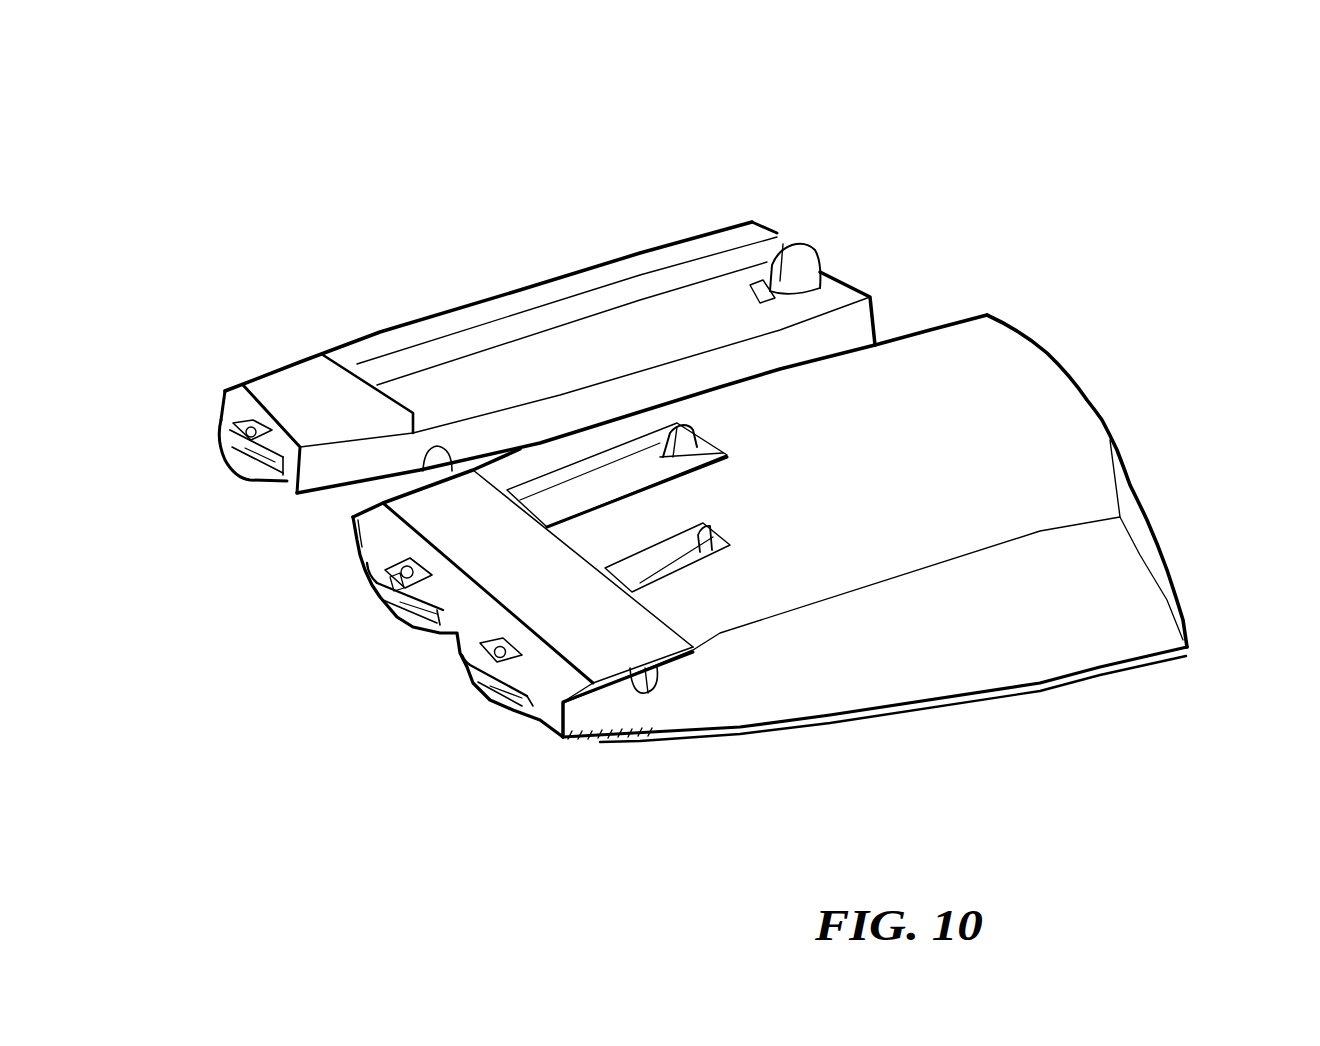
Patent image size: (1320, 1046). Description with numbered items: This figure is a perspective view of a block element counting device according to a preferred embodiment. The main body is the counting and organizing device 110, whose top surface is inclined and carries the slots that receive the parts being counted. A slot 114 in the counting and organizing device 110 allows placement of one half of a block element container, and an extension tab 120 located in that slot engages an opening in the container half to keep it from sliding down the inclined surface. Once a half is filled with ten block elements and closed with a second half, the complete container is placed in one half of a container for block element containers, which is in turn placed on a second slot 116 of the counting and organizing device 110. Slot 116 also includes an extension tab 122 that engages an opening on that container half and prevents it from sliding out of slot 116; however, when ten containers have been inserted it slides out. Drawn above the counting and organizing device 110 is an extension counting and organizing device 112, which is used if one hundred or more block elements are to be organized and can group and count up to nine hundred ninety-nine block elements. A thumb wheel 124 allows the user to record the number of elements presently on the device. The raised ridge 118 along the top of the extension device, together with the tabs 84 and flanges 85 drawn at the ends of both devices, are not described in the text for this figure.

The mounting tab 84 is at (217, 413).
The flange 85 is at (253, 470).
The counting and organizing device 110 is at (1067, 440).
The extension counting and organizing device 112 is at (680, 240).
The slot 114 is at (677, 560).
The slot 116 is at (717, 457).
The ridge 118 is at (518, 358).
The extension tab 120 is at (720, 533).
The extension tab 122 is at (693, 432).
The thumb wheel 124 is at (797, 250).